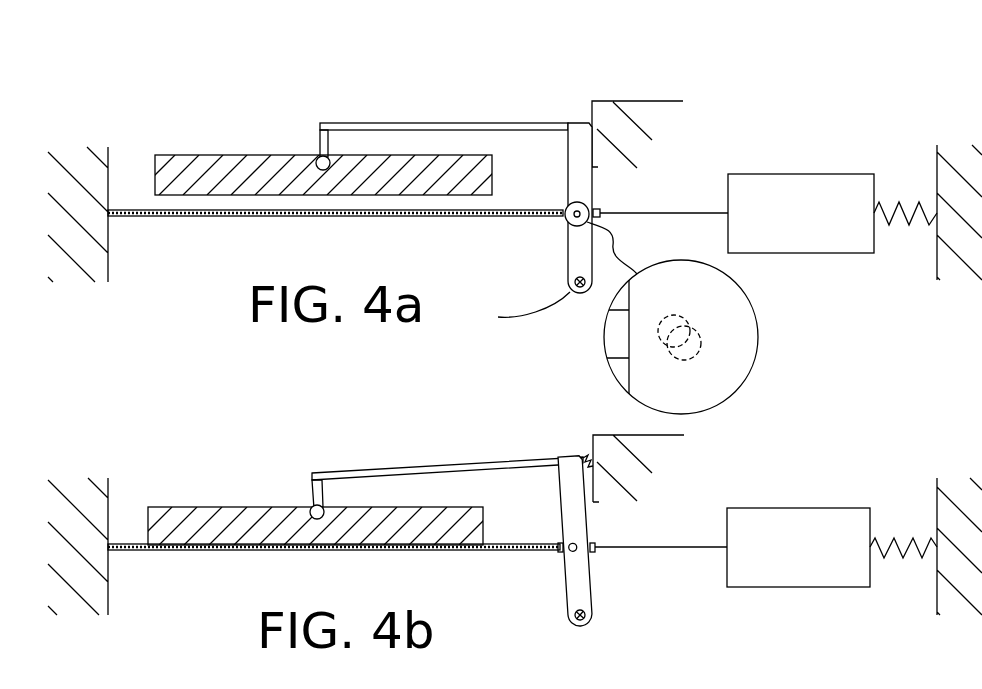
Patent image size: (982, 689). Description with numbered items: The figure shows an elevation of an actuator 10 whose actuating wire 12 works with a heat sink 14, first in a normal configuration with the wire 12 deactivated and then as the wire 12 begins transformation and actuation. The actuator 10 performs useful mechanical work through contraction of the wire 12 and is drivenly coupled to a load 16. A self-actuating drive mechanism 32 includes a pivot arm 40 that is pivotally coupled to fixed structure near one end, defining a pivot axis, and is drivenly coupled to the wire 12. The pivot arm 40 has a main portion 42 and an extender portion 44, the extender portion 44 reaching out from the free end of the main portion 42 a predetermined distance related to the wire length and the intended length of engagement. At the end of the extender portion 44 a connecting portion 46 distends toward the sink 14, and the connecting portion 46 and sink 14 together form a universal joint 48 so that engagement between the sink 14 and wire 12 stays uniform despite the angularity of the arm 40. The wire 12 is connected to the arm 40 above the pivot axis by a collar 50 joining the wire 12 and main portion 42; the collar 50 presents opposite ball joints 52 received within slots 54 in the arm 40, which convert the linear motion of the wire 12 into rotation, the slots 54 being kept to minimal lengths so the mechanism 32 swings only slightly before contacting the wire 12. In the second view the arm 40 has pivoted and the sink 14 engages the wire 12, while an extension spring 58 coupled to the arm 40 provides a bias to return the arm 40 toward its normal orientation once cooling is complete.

In FIG. 4a, the actuator 10 is at (150, 82).
In FIG. 4a, the actuating wire 12 is at (150, 216).
In FIG. 4a, the heat sink 14 is at (212, 155).
In FIG. 4a, the load 16 is at (778, 225).
In FIG. 4b, the drive mechanism 32 is at (266, 422).
In FIG. 4a, the pivot arm 40 is at (529, 110).
In FIG. 4a, the main portion 42 is at (568, 258).
In FIG. 4a, the extender portion 44 is at (433, 123).
In FIG. 4b, the extender portion 44 is at (425, 467).
In FIG. 4a, the connecting portion 46 is at (319, 152).
In FIG. 4a, the universal joint 48 is at (315, 158).
In FIG. 4a, the collar 50 is at (592, 208).
In FIG. 4a, the ball joints 52 is at (690, 347).
In FIG. 4a, the slots 54 is at (687, 318).
In FIG. 4b, the extension spring 58 is at (588, 456).